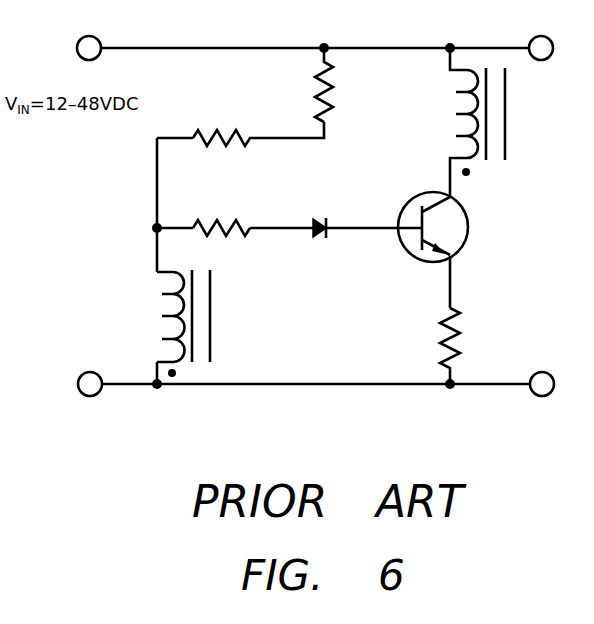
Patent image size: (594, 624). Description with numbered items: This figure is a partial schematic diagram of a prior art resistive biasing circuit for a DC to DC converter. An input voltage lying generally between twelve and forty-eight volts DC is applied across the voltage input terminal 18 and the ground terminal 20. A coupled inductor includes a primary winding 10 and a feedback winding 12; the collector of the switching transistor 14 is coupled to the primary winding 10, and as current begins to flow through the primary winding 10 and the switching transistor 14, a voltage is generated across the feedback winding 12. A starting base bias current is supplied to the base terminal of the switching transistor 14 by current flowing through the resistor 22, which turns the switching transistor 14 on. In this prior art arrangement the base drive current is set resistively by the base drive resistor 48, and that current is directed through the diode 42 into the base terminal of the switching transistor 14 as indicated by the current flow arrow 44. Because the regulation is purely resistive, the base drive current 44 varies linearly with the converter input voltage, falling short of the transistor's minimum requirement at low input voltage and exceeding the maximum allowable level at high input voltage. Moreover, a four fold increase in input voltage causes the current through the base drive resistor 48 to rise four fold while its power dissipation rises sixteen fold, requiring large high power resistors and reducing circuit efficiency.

The primary winding 10 is at (449, 114).
The feedback winding 12 is at (155, 316).
The switching transistor 14 is at (423, 196).
The voltage input terminal 18 is at (81, 40).
The ground terminal 20 is at (86, 373).
The resistor 22 is at (314, 98).
The diode 42 is at (318, 238).
The current flow arrow 44 is at (380, 201).
The base drive resistor 48 is at (236, 220).